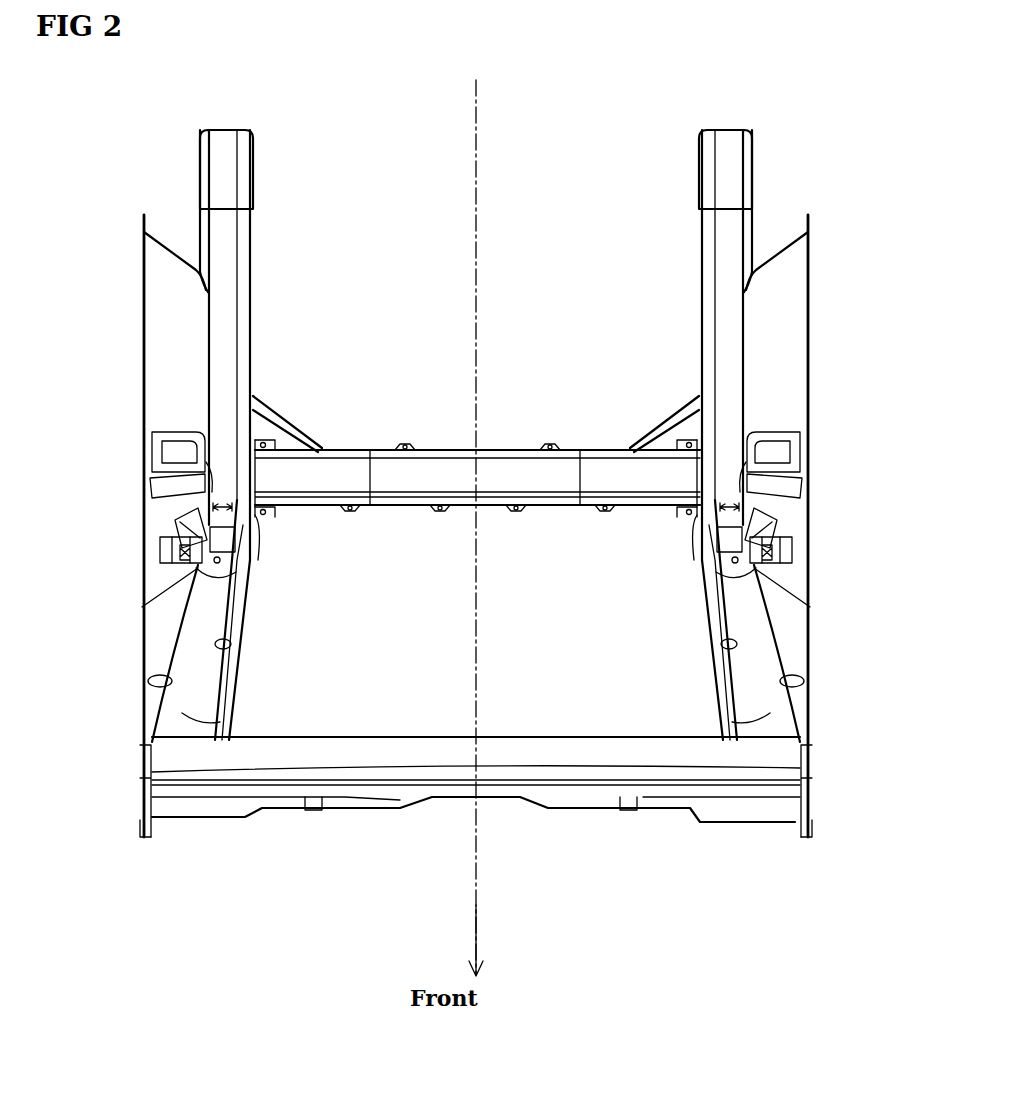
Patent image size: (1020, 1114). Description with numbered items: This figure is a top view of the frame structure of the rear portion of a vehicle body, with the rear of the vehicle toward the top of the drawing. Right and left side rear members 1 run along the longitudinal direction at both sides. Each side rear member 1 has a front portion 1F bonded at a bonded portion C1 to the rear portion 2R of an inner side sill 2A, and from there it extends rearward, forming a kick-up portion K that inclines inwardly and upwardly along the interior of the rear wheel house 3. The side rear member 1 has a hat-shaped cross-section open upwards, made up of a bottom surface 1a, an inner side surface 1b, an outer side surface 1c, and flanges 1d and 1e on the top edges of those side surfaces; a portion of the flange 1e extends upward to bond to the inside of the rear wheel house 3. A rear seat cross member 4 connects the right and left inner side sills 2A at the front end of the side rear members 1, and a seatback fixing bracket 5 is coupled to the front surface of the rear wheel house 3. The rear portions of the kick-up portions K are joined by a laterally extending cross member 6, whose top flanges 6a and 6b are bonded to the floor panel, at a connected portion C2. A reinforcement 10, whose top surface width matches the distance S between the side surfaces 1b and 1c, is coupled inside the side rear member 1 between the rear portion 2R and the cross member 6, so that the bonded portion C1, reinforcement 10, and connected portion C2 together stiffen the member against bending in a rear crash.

The side rear member 1 is at (267, 281).
The bottom surface 1a is at (240, 612).
The inner side surface 1b is at (228, 648).
The outer side surface 1c is at (165, 682).
The flange 1d is at (248, 369).
The flange 1e is at (205, 233).
The front portion 1F is at (218, 720).
The inner side sill 2A is at (157, 845).
The rear portion 2R is at (178, 568).
The rear wheel house 3 is at (170, 329).
The rear seat cross member 4 is at (352, 745).
The seatback fixing bracket 5 is at (176, 516).
The cross member 6 is at (514, 441).
The flange 6a is at (528, 506).
The flange 6b is at (428, 447).
The reinforcement 10 is at (162, 546).
The bonded portion C1 is at (255, 585).
The connected portion C2 is at (206, 462).
The kick-up portion K is at (280, 531).
The distance S is at (476, 498).